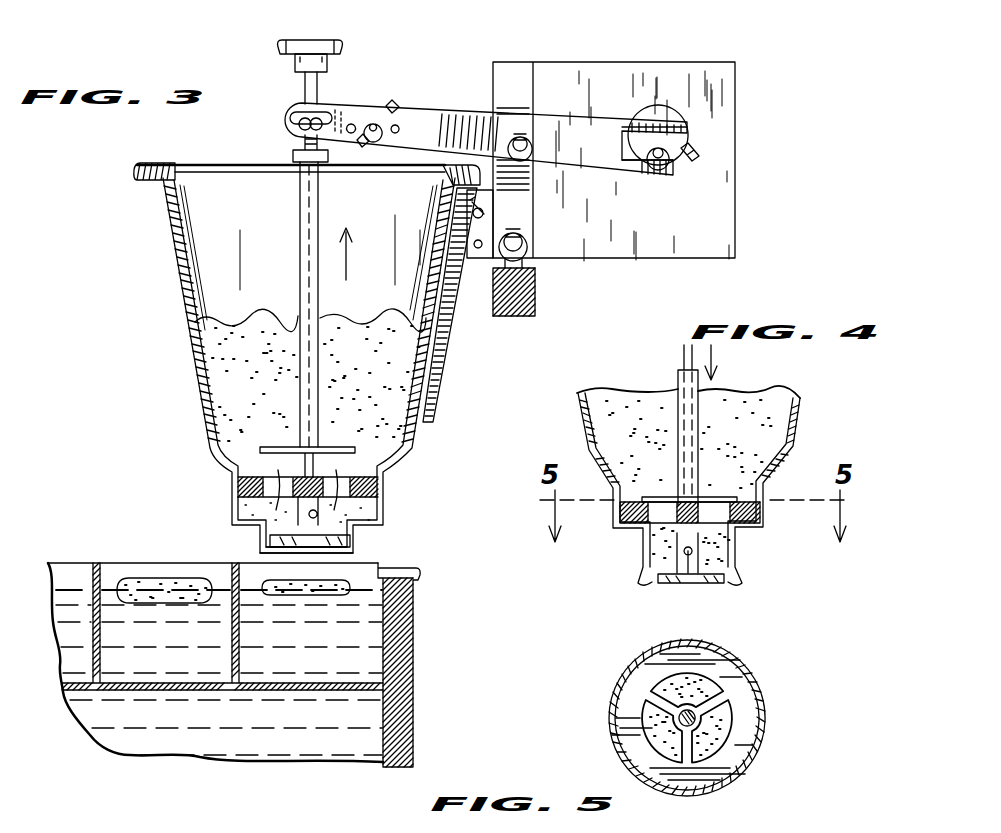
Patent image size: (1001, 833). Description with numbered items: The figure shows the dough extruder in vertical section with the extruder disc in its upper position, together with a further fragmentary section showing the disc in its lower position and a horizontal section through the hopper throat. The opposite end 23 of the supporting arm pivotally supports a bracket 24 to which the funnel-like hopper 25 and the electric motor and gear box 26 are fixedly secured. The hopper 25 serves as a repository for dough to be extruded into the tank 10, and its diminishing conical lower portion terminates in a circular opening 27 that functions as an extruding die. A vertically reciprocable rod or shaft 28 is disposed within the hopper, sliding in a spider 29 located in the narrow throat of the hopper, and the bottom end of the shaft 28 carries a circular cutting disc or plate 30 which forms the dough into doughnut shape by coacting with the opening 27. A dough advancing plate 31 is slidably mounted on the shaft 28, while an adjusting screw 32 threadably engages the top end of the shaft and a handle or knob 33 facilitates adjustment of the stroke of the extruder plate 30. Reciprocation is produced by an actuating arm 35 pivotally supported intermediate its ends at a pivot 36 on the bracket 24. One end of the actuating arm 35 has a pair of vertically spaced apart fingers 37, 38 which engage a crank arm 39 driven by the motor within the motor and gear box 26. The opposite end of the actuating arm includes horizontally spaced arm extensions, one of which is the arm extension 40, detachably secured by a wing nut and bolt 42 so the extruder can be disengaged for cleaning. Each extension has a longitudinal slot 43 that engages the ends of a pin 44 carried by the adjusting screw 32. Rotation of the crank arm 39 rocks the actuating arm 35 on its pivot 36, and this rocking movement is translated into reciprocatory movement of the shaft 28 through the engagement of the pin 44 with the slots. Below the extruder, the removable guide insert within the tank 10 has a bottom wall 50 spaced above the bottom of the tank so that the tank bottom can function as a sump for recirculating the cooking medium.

In FIG. 3, the tank 10 is at (427, 684).
In FIG. 3, the opposite end of arm 23 is at (535, 293).
In FIG. 3, the bracket 24 is at (533, 221).
In FIG. 3, the funnel-like hopper 25 is at (182, 290).
In FIG. 4, the funnel-like hopper 25 is at (777, 418).
In FIG. 5, the funnel-like hopper 25 is at (756, 755).
In FIG. 3, the electric motor and gear box 26 is at (715, 62).
In FIG. 3, the circular opening 27 is at (332, 557).
In FIG. 3, the vertically reciprocable rod or shaft 28 is at (300, 225).
In FIG. 4, the vertically reciprocable rod or shaft 28 is at (682, 360).
In FIG. 4, the spider 29 is at (747, 521).
In FIG. 5, the spider 29 is at (728, 707).
In FIG. 3, the circular cutting disc or plate 30 is at (270, 539).
In FIG. 4, the circular cutting disc or plate 30 is at (702, 583).
In FIG. 3, the dough advancing plate 31 is at (273, 447).
In FIG. 4, the dough advancing plate 31 is at (713, 498).
In FIG. 3, the adjusting screw 32 is at (300, 138).
In FIG. 3, the handle or knob 33 is at (318, 40).
In FIG. 3, the actuating arm 35 is at (592, 118).
In FIG. 3, the pivot 36 is at (520, 127).
In FIG. 3, the finger 37 is at (672, 126).
In FIG. 3, the finger 38 is at (655, 176).
In FIG. 3, the crank arm 39 is at (674, 121).
In FIG. 3, the arm extension 40 is at (353, 118).
In FIG. 3, the wing nut and bolt 42 is at (400, 110).
In FIG. 3, the longitudinal slot 43 is at (322, 125).
In FIG. 3, the pin 44 is at (305, 115).
In FIG. 3, the bottom wall 50 is at (165, 690).